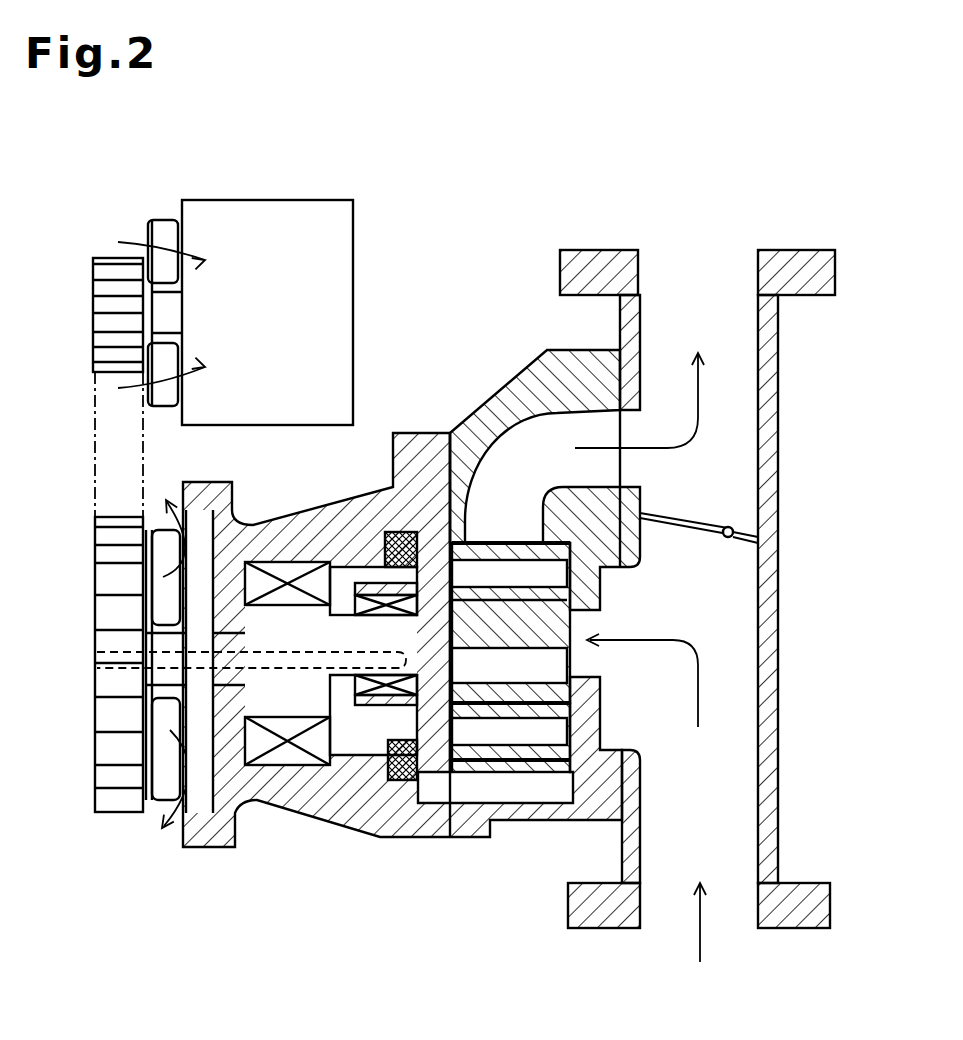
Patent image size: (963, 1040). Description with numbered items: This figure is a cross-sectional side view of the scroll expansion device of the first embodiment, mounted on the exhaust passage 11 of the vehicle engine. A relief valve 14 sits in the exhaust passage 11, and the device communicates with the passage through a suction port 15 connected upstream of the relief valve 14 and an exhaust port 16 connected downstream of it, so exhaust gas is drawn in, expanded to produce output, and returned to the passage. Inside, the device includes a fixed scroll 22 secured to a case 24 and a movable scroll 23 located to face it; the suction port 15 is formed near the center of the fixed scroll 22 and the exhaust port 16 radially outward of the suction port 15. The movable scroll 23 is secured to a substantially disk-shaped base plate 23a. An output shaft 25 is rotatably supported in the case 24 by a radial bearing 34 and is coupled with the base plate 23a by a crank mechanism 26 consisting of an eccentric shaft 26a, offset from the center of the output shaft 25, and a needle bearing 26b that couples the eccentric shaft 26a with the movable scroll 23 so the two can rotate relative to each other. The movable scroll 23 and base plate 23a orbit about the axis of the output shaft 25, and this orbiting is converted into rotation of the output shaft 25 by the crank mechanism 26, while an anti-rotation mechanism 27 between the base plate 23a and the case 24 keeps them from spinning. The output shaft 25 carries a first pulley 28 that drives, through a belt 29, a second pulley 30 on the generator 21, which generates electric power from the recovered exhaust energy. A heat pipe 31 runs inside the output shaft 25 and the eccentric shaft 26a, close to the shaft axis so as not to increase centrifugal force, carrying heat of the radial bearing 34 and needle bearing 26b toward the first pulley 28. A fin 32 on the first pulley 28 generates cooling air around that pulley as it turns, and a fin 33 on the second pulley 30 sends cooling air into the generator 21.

The exhaust passage 11 is at (748, 600).
The relief valve 14 is at (745, 518).
The suction port 15 is at (593, 612).
The exhaust port 16 is at (533, 430).
The generator 21 is at (357, 250).
The fixed scroll 22 is at (525, 762).
The movable scroll 23 is at (517, 542).
The base plate 23a is at (437, 522).
The case 24 is at (478, 838).
The output shaft 25 is at (163, 678).
The crank mechanism 26 is at (373, 605).
The eccentric shaft 26a is at (345, 618).
The needle bearing 26b is at (378, 700).
The anti-rotation mechanism 27 is at (397, 782).
The first pulley 28 is at (100, 582).
The belt 29 is at (107, 457).
The second pulley 30 is at (97, 303).
The heat pipe 31 is at (262, 652).
The fin 32 is at (158, 800).
The fin 33 is at (160, 228).
The radial bearing 34 is at (290, 758).